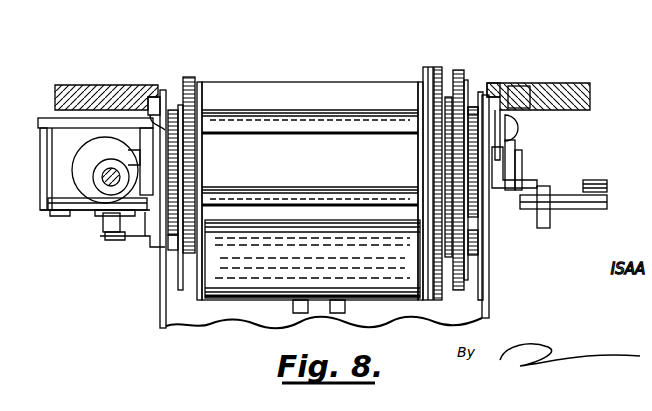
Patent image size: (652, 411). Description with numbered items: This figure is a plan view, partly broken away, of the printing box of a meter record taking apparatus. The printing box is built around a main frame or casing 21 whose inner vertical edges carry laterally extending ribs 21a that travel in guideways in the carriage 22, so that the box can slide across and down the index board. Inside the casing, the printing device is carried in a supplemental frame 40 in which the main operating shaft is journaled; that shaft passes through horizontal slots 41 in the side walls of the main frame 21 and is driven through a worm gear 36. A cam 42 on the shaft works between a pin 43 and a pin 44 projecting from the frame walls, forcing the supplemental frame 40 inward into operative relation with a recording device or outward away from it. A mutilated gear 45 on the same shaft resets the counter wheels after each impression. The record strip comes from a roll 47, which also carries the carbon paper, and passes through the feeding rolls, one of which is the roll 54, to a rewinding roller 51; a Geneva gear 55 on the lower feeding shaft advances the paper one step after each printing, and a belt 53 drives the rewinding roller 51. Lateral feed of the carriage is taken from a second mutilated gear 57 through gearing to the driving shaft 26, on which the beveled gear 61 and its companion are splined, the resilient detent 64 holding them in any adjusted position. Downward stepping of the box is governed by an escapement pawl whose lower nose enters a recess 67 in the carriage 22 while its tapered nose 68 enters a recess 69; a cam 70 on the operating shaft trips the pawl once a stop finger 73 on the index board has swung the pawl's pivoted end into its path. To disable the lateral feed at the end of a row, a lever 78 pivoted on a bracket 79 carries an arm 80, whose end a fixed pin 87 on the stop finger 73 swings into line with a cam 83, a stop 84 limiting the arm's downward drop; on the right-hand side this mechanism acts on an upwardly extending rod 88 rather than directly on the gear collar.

The main frame 21 is at (162, 303).
The laterally extending ribs 21a is at (150, 85).
The carriage 22 is at (91, 85).
The driving shaft 26 is at (110, 166).
The worm gear 36 is at (472, 106).
The supplemental frame 40 is at (204, 97).
The horizontal slots 41 is at (125, 238).
The cam 42 is at (160, 175).
The pin 43 is at (168, 273).
The pin 44 is at (199, 80).
The mutilated gear 45 is at (439, 66).
The roll 47 is at (312, 266).
The rewinding roller 51 is at (327, 189).
The belt 53 is at (456, 70).
The feeding roll 54 is at (296, 136).
The Geneva gear 55 is at (428, 67).
The mutilated gear 57 is at (191, 76).
The beveled gear 61 is at (100, 158).
The resilient detent 64 is at (111, 240).
The recess 67 is at (518, 104).
The tapered nose 68 is at (163, 122).
The recess 69 is at (502, 90).
The cam 70 is at (160, 168).
The stop finger 73 is at (65, 118).
The lever 78 is at (80, 211).
The bracket 79 is at (42, 216).
The arm 80 is at (102, 226).
The cam 83 is at (120, 150).
The stop 84 is at (61, 183).
The pin 87 is at (46, 212).
The rod 88 is at (545, 229).